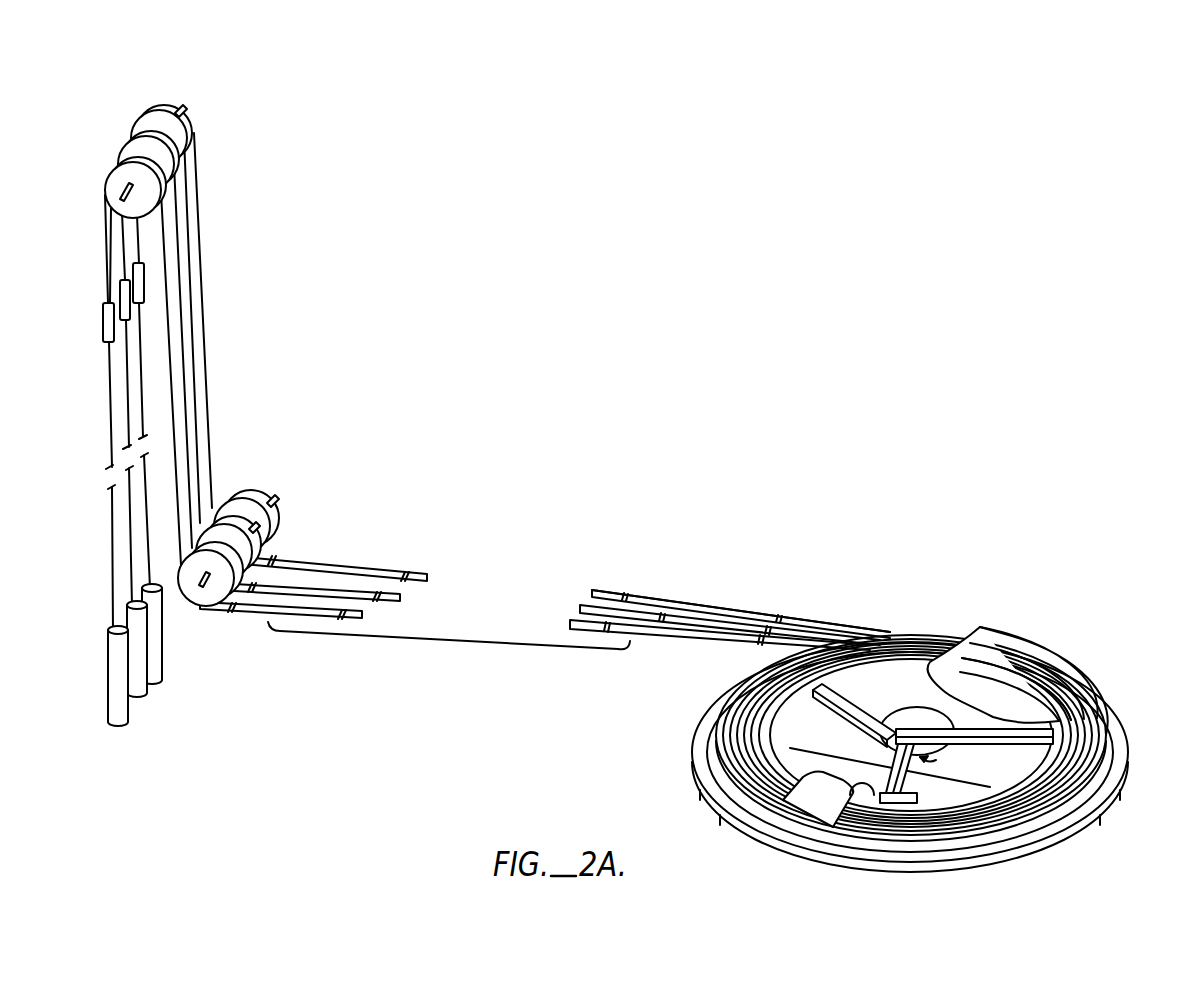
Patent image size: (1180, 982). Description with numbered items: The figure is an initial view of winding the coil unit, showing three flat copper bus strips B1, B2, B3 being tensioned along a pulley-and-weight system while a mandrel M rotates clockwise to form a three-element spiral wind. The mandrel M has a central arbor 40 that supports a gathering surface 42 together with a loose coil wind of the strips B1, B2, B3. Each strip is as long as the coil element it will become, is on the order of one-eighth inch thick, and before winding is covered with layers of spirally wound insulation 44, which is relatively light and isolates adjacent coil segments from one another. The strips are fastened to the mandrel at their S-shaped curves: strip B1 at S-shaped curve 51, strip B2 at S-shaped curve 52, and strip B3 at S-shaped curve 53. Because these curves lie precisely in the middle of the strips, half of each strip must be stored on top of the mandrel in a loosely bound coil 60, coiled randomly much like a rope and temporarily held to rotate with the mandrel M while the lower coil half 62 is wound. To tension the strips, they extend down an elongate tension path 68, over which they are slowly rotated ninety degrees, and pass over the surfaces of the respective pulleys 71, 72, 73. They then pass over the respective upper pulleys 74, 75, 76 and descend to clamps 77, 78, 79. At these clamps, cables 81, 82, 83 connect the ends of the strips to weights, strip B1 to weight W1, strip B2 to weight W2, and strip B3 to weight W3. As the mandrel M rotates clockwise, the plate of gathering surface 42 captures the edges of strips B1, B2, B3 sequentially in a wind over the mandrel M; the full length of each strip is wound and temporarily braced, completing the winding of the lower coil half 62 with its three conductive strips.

The central arbor 40 is at (793, 678).
The gathering surface 42 is at (1075, 668).
The spirally wound insulation 44 is at (737, 613).
The S-shaped curve 51 is at (837, 677).
The S-shaped curve 52 is at (845, 808).
The S-shaped curve 53 is at (1040, 733).
The loosely bound coil 60 is at (1050, 708).
The lower coil half 62 is at (740, 785).
The elongate tension path 68 is at (449, 650).
The pulley 71 is at (257, 496).
The pulley 72 is at (252, 524).
The pulley 73 is at (208, 596).
The upper pulley 74 is at (193, 138).
The upper pulley 75 is at (177, 170).
The upper pulley 76 is at (162, 192).
The clamp 77 is at (132, 273).
The clamp 78 is at (122, 292).
The clamp 79 is at (102, 327).
The cable 81 is at (150, 525).
The cable 82 is at (132, 555).
The cable 83 is at (115, 587).
The strip B1 is at (368, 567).
The strip B2 is at (322, 590).
The strip B3 is at (275, 607).
The weight W1 is at (167, 660).
The weight W2 is at (152, 688).
The weight W3 is at (132, 715).
The mandrel M is at (743, 832).